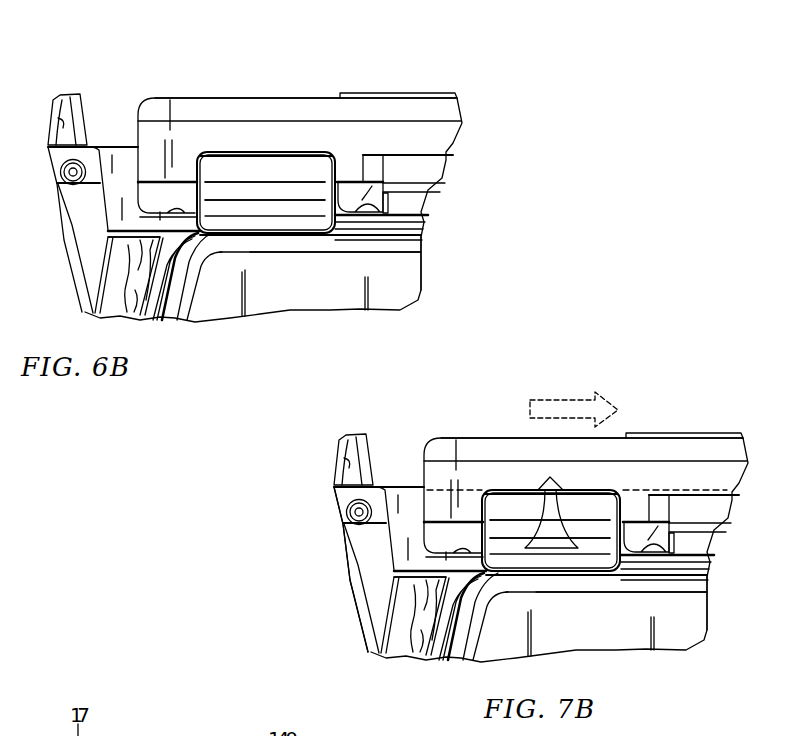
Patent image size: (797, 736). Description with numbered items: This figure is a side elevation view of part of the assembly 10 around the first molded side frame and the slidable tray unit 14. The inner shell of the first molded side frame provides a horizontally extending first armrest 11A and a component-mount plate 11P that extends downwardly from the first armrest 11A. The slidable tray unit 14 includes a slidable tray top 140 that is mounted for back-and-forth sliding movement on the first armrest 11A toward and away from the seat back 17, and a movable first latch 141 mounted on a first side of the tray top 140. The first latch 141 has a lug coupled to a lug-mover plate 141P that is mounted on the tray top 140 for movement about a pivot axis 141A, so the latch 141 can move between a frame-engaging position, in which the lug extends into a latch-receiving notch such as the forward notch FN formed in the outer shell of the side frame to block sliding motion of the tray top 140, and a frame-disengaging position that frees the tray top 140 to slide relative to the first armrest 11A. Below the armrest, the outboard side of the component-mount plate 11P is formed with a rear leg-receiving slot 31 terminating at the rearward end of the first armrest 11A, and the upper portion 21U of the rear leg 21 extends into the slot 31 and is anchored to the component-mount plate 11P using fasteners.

In FIG. 6B, the assembly 10 is at (530, 67).
In FIG. 7B, the assembly 10 is at (633, 380).
In FIG. 6B, the slidable tray unit 14 is at (302, 85).
In FIG. 7B, the slidable tray unit 14 is at (685, 425).
In FIG. 6B, the slidable tray top 140 is at (227, 85).
In FIG. 7B, the slidable tray top 140 is at (480, 422).
In FIG. 6B, the movable first latch 141 is at (269, 250).
In FIG. 7B, the movable first latch 141 is at (543, 590).
In FIG. 7B, the pivot axis 141A is at (458, 491).
In FIG. 6B, the lug-mover plate 141P is at (291, 170).
In FIG. 7B, the lug-mover plate 141P is at (590, 505).
In FIG. 6B, the seat back 17 is at (66, 85).
In FIG. 7B, the seat back 17 is at (351, 422).
In FIG. 6B, the first armrest 11A is at (115, 130).
In FIG. 7B, the first armrest 11A is at (393, 465).
In FIG. 6B, the component-mount plate 11P is at (202, 297).
In FIG. 7B, the component-mount plate 11P is at (620, 608).
In FIG. 6B, the forward notch FN is at (390, 200).
In FIG. 7B, the forward notch FN is at (677, 538).
In FIG. 6B, the rear leg 21 is at (85, 267).
In FIG. 7B, the rear leg 21 is at (375, 620).
In FIG. 6B, the upper portion of rear leg 21U is at (140, 248).
In FIG. 7B, the upper portion of rear leg 21U is at (422, 590).
In FIG. 6B, the rear leg-receiving slot 31 is at (150, 279).
In FIG. 7B, the rear leg-receiving slot 31 is at (425, 645).